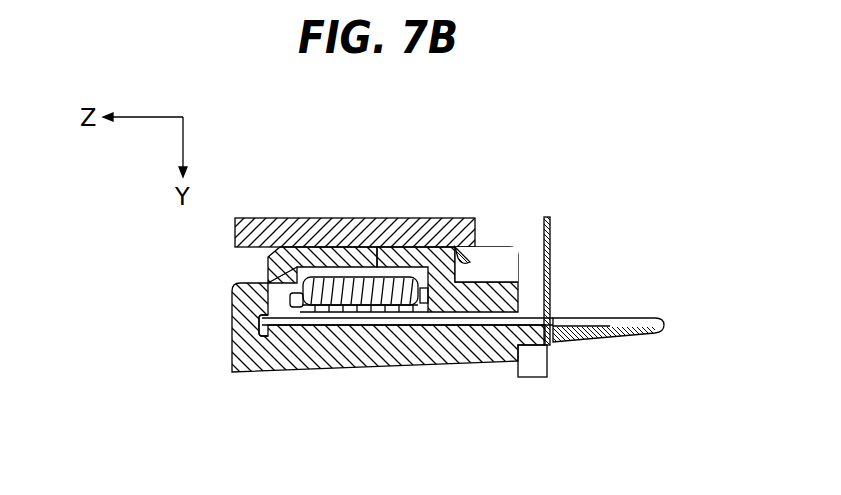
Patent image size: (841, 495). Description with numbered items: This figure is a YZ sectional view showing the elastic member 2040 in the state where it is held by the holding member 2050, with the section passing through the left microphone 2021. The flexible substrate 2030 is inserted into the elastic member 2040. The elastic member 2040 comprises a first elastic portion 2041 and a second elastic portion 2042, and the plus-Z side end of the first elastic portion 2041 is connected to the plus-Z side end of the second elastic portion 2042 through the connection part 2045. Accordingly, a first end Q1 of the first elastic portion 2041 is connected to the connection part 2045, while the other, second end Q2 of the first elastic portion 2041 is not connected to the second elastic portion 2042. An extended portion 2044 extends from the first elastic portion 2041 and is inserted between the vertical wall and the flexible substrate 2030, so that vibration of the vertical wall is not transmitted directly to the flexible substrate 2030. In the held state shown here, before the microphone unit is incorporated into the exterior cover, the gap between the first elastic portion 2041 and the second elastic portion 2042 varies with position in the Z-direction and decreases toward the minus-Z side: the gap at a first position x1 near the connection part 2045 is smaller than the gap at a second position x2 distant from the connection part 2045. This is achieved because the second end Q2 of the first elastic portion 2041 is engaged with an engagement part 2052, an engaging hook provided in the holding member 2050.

The elastic member 2040 is at (470, 261).
The second elastic portion 2042 is at (332, 262).
The first elastic portion 2041 is at (365, 372).
The connection part 2045 is at (247, 323).
The flexible substrate 2030 is at (440, 325).
The left microphone 2021 is at (368, 300).
The holding member 2050 is at (530, 267).
The extended portion 2044 is at (602, 330).
The engagement part 2052 is at (530, 352).
The first position x1 is at (272, 332).
The second position x2 is at (505, 312).
The first end Q1 is at (237, 378).
The second end Q2 is at (545, 343).